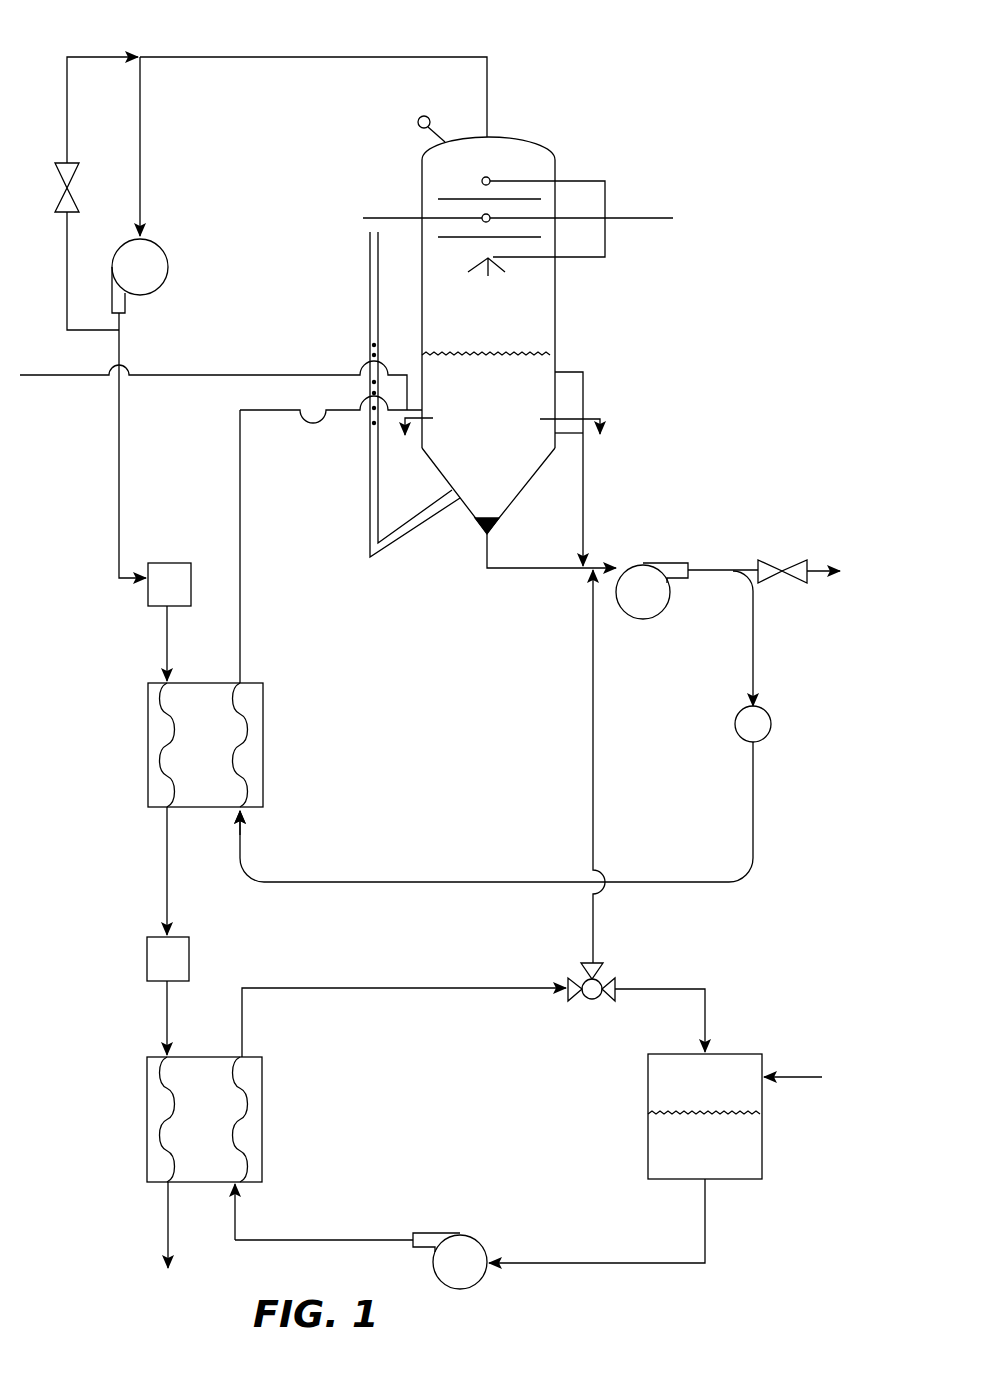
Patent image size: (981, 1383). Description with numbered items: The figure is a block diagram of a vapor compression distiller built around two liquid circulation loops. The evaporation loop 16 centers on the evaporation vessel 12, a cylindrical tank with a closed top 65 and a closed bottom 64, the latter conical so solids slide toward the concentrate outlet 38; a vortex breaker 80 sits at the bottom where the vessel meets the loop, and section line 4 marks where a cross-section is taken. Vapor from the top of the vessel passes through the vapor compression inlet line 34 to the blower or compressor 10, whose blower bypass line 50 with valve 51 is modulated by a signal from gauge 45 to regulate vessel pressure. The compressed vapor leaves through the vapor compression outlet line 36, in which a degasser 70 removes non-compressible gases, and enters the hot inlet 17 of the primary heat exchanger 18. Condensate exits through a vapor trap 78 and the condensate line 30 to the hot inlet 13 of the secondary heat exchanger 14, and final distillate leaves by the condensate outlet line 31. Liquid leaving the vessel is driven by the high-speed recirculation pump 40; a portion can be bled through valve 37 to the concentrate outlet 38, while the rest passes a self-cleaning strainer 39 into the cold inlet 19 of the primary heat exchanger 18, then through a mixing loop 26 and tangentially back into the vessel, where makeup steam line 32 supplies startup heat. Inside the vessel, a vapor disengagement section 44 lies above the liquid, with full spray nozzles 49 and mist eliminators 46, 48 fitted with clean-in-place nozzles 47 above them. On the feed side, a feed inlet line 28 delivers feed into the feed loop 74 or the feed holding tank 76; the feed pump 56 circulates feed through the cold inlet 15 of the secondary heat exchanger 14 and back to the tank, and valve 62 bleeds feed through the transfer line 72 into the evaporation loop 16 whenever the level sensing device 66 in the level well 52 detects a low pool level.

The section line 4— 4 is at (504, 444).
The blower or compressor 10 is at (152, 243).
The evaporation vessel 12 is at (555, 337).
The hot inlet of secondary heat exchanger 13 is at (167, 1055).
The secondary heat exchanger 14 is at (147, 1120).
The cold inlet of secondary heat exchanger 15 is at (242, 1187).
The evaporation loop 16 is at (240, 572).
The hot inlet of primary heat exchanger 17 is at (167, 683).
The primary heat exchanger 18 is at (148, 738).
The cold inlet of primary heat exchanger 19 is at (240, 813).
The mixing loop 26 is at (316, 425).
The feed inlet line 28 is at (805, 1077).
The condensate line 30 is at (167, 879).
The condensate outlet line 31 is at (168, 1235).
The makeup steam line 32 is at (240, 375).
The vapor compression inlet line 34 is at (258, 57).
The vapor compression outlet line 36 is at (119, 518).
The valve 37 is at (770, 560).
The concentrate outlet 38 is at (817, 573).
The self-cleaning strainer 39 is at (771, 724).
The high-speed recirculation pump 40 is at (662, 563).
The vapor disengagement section 44 is at (467, 339).
The gauge 45 is at (418, 121).
The mist eliminator 46 is at (502, 218).
The clean-in-place nozzles 47 is at (490, 178).
The mist eliminator 48 is at (531, 199).
The full spray nozzles 49 is at (507, 268).
The blower bypass line 50 is at (94, 57).
The valve 51 is at (57, 165).
The level well 52 is at (370, 246).
The feed pump 56 is at (458, 1233).
The valve 62 is at (588, 1002).
The closed bottom 64 is at (527, 487).
The closed top 65 is at (500, 135).
The level sensing device 66 is at (377, 345).
The degasser 70 is at (157, 563).
The transfer line 72 is at (593, 743).
The feed loop 74 is at (350, 988).
The feed holding tank 76 is at (762, 1152).
The vapor trap 78 is at (147, 963).
The vortex breaker 80 is at (478, 527).